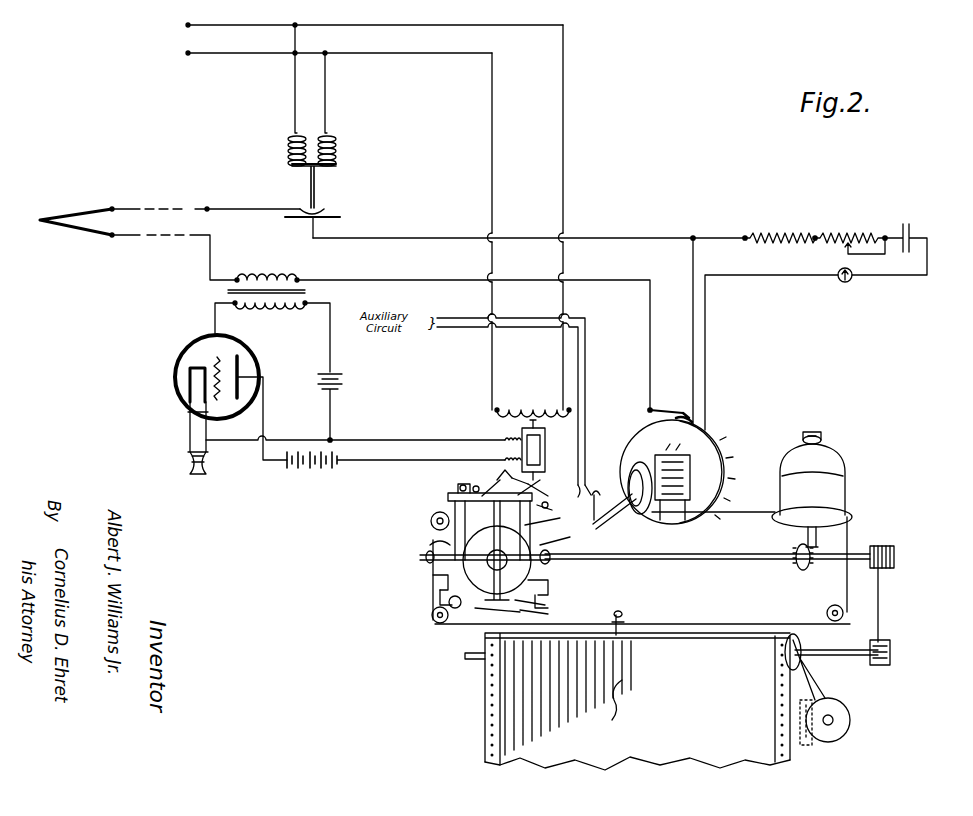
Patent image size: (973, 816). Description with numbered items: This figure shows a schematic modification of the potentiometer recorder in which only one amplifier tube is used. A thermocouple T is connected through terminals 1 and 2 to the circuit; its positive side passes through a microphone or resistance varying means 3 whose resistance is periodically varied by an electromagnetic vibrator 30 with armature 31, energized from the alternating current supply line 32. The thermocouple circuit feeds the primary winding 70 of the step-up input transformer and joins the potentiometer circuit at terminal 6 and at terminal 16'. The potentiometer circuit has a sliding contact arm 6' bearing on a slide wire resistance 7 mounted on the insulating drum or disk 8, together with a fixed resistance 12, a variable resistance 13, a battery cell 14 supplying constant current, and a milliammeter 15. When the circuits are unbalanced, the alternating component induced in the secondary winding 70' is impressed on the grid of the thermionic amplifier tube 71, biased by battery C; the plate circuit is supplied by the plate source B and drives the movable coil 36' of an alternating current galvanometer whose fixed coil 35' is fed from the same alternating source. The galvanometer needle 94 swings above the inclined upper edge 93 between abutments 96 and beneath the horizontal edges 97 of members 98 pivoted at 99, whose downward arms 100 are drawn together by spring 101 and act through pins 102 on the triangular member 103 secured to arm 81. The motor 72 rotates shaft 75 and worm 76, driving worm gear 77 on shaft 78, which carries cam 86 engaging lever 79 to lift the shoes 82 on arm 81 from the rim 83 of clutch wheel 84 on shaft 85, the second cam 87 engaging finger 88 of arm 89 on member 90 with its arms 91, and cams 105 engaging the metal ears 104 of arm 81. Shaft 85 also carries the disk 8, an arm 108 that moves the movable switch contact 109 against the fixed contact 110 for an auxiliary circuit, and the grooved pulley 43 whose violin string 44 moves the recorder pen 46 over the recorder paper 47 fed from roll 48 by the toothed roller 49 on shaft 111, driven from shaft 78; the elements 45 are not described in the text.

The thermocouple T is at (77, 221).
The terminal 1 is at (206, 201).
The terminal 2 is at (174, 257).
The alternating current supply line 32 is at (196, 38).
The electromagnetic vibrator 30 is at (338, 144).
The armature 31 is at (330, 168).
The microphone 3 is at (340, 214).
The conductor junction 16' is at (677, 328).
The fixed resistance 12 is at (780, 247).
The variable resistance 13 is at (851, 247).
The battery cell 14 is at (912, 232).
The milliammeter 15 is at (850, 282).
The primary winding 70 is at (439, 331).
The secondary winding 70' is at (272, 336).
The battery C is at (338, 408).
The thermionic amplifier tube 71 is at (172, 378).
The source of plate supply B is at (388, 472).
The fixed coil 35' is at (533, 397).
The movable coil 36' is at (543, 450).
The fixed contact 110 is at (596, 466).
The movable switch contact 109 is at (600, 496).
The terminal 6 is at (655, 407).
The sliding contact arm 6' is at (680, 406).
The slide wire resistance 7 is at (727, 468).
The insulating drum 8 is at (700, 488).
The grooved pulley 43 is at (640, 510).
The shaft 85 is at (606, 522).
The arm 108 is at (672, 520).
The violin string 44 is at (738, 512).
The electrical motor 72 is at (850, 492).
The shaft 75 is at (818, 537).
The worm 76 is at (810, 565).
The shaft 78 is at (758, 554).
The worm gear 77 is at (800, 566).
The shaft 111 is at (836, 662).
The roller 45 is at (843, 617).
The arm 81 is at (497, 551).
The lever 79 is at (492, 530).
The edges 97 is at (450, 503).
The abutments 96 is at (456, 490).
The pivot 99 is at (439, 479).
The members 98 is at (508, 485).
The arms 91 is at (518, 480).
The upper edge 93 is at (498, 469).
The needle 94 is at (517, 472).
The member 90 is at (555, 499).
The arm 89 is at (540, 512).
The second cam 87 is at (544, 531).
The finger 88 is at (564, 546).
The spring 101 is at (433, 510).
The arms 100 is at (431, 521).
The cam 86 is at (429, 544).
The cams 105 is at (420, 556).
The metal ears 104 is at (431, 584).
The shoe 82 is at (436, 602).
The pins 102 is at (462, 611).
The triangular member 103 is at (506, 617).
The rim 83 is at (541, 601).
The clutch disk 84 is at (545, 615).
The recorder paper 47 is at (627, 701).
The recorder pen 46 is at (624, 620).
The roller 49 is at (805, 645).
The roll 48 is at (850, 722).